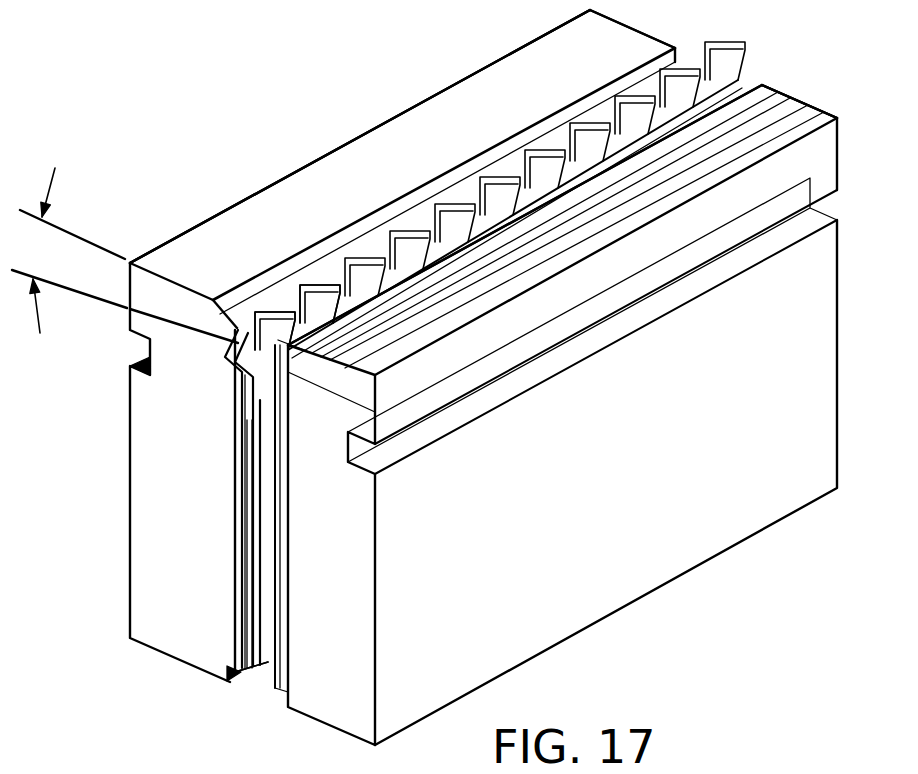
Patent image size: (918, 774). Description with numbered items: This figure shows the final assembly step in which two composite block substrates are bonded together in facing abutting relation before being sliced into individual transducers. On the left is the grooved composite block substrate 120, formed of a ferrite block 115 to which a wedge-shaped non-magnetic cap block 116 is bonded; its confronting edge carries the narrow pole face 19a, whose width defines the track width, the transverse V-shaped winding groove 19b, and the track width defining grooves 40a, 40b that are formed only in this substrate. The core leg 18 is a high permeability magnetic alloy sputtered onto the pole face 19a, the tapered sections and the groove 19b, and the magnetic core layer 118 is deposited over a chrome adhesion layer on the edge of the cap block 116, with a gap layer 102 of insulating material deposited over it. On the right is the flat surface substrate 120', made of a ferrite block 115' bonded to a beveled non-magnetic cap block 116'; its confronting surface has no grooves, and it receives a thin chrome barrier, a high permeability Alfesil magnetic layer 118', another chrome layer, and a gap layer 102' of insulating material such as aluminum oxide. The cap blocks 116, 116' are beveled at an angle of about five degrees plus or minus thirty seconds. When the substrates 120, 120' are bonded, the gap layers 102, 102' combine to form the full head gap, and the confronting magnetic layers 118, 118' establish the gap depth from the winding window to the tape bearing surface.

The ferrite block 115 is at (402, 346).
The ferrite block 115' is at (557, 415).
The wedge-shaped non-magnetic cap block 116 is at (360, 136).
The wedge-shaped non-magnetic cap block 116' is at (562, 190).
The composite block substrate 120 is at (402, 136).
The flat surface substrate 120' is at (827, 113).
The pole face 19a is at (218, 312).
The V-shaped groove 19b is at (222, 372).
The track width defining groove 40a is at (262, 285).
The track width defining groove 40b is at (307, 252).
The core leg 18 is at (442, 391).
The magnetic core layer 118 is at (442, 391).
The gap layer 102 is at (215, 536).
The gap layer 102' is at (234, 701).
The magnetic layer 118' is at (314, 556).